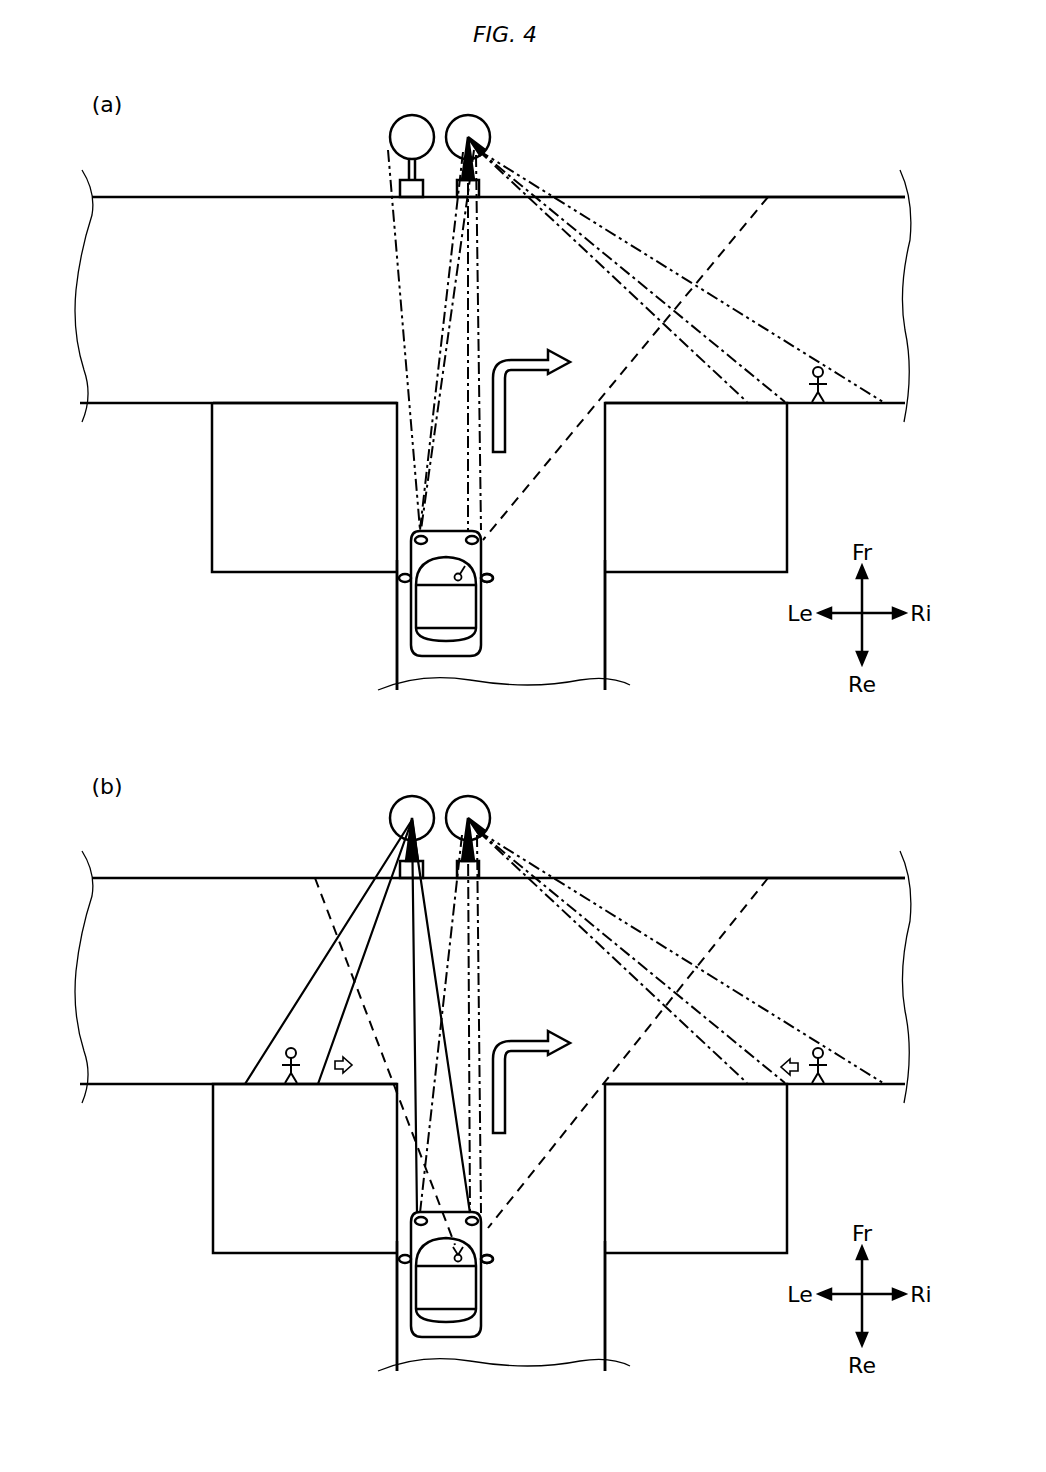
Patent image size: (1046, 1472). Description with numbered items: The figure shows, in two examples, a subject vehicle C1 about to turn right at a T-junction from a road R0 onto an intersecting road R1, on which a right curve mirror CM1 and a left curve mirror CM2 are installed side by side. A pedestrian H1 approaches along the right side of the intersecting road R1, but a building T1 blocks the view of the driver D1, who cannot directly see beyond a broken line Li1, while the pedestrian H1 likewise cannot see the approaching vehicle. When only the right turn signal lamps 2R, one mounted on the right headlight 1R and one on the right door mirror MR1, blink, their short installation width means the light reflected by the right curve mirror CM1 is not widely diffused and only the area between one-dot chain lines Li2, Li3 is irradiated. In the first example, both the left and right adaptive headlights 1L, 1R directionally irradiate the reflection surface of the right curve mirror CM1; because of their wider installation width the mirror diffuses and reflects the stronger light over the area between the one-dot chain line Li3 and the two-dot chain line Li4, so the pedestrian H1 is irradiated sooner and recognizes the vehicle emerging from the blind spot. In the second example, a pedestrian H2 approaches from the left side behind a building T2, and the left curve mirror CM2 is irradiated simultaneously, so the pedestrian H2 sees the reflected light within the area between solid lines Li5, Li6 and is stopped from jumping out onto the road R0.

The right curve mirror CM1 is at (470, 115).
The left curve mirror CM2 is at (413, 115).
The broken line Li1 is at (728, 212).
The one-dot chain line Li2 is at (557, 232).
The one-dot chain line Li3 is at (613, 238).
The two-dot chain line Li4 is at (452, 290).
The solid line Li5 is at (361, 959).
The solid line Li6 is at (420, 898).
The intersecting road R1 is at (845, 198).
The road R0 is at (598, 652).
The building T1 is at (765, 492).
The building T2 is at (296, 1252).
The pedestrian H1 is at (828, 400).
The pedestrian H2 is at (288, 1084).
The subject vehicle C1 is at (481, 646).
The left adaptive headlight 1L is at (416, 538).
The right adaptive headlight 1R is at (480, 534).
The right turn signal lamp 2R is at (474, 534).
The right door mirror MR1 is at (493, 580).
The driver D1 is at (462, 581).